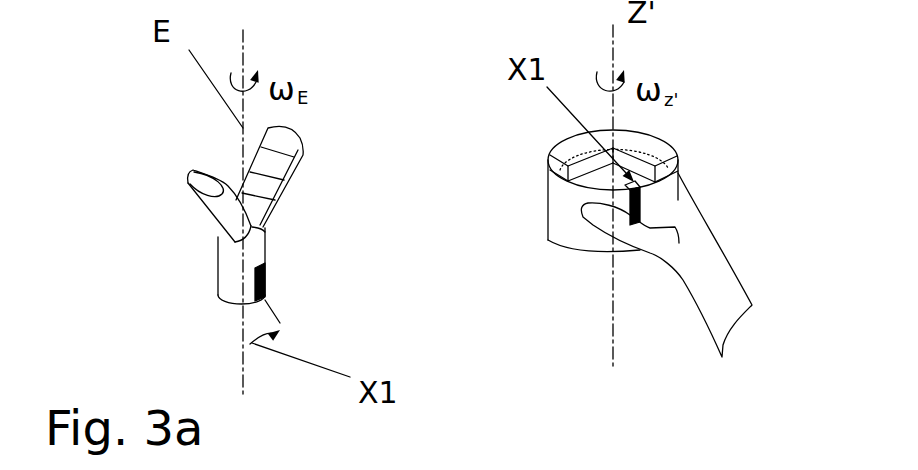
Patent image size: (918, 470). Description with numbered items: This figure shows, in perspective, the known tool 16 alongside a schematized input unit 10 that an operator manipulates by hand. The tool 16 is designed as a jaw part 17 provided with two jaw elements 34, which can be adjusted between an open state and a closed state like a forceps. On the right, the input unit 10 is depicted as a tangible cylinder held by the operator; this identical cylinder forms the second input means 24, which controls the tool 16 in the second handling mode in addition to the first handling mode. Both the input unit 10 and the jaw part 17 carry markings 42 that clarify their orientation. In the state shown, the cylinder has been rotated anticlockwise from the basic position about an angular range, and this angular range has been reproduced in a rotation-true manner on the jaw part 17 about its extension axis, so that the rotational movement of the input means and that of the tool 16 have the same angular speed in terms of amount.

The input unit 10 is at (731, 136).
The tool 16 is at (342, 208).
The jaw part 17 is at (155, 158).
The second input means 24 is at (658, 163).
The jaw elements 34 is at (210, 193).
The markings 42 is at (255, 283).